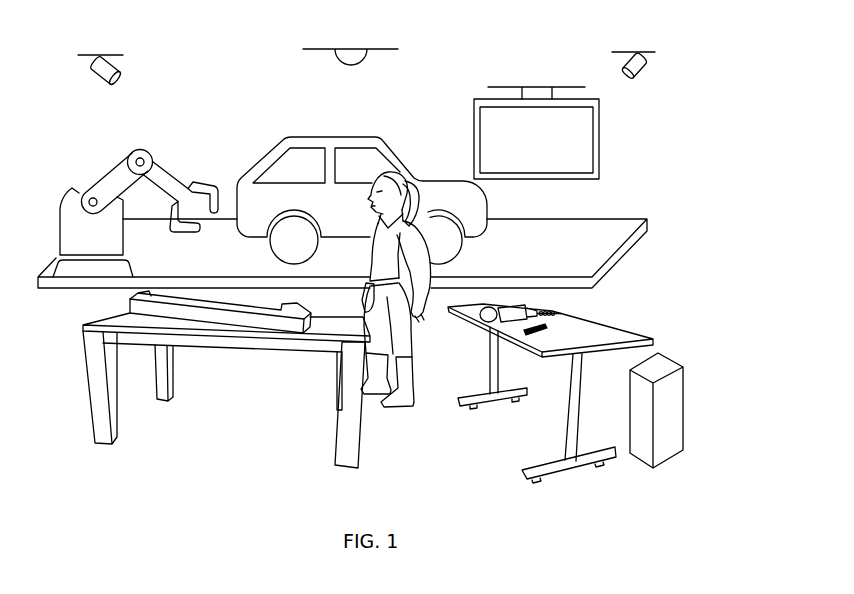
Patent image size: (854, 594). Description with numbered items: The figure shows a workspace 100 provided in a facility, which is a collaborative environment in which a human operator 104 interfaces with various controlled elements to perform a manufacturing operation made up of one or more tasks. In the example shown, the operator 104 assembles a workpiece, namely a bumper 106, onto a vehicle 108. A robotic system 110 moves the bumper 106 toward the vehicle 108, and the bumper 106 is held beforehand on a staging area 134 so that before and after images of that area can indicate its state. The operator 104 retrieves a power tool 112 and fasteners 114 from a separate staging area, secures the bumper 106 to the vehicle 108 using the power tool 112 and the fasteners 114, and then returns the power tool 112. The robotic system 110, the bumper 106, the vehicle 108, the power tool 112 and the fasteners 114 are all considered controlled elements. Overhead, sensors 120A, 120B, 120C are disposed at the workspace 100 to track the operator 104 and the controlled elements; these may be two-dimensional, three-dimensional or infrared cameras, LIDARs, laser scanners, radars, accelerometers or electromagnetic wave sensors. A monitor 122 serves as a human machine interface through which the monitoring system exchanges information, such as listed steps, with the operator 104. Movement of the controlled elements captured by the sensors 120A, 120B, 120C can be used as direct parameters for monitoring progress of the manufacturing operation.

The workspace 100 is at (684, 40).
The human operator 104 is at (408, 338).
The bumper 106 is at (131, 305).
The vehicle 108 is at (343, 136).
The robotic system 110 is at (100, 178).
The power tool 112 is at (562, 313).
The fasteners 114 is at (571, 313).
The sensor 120A is at (95, 67).
The sensor 120B is at (333, 58).
The sensor 120C is at (648, 68).
The monitor 122 is at (599, 138).
The staging area 134 is at (68, 332).